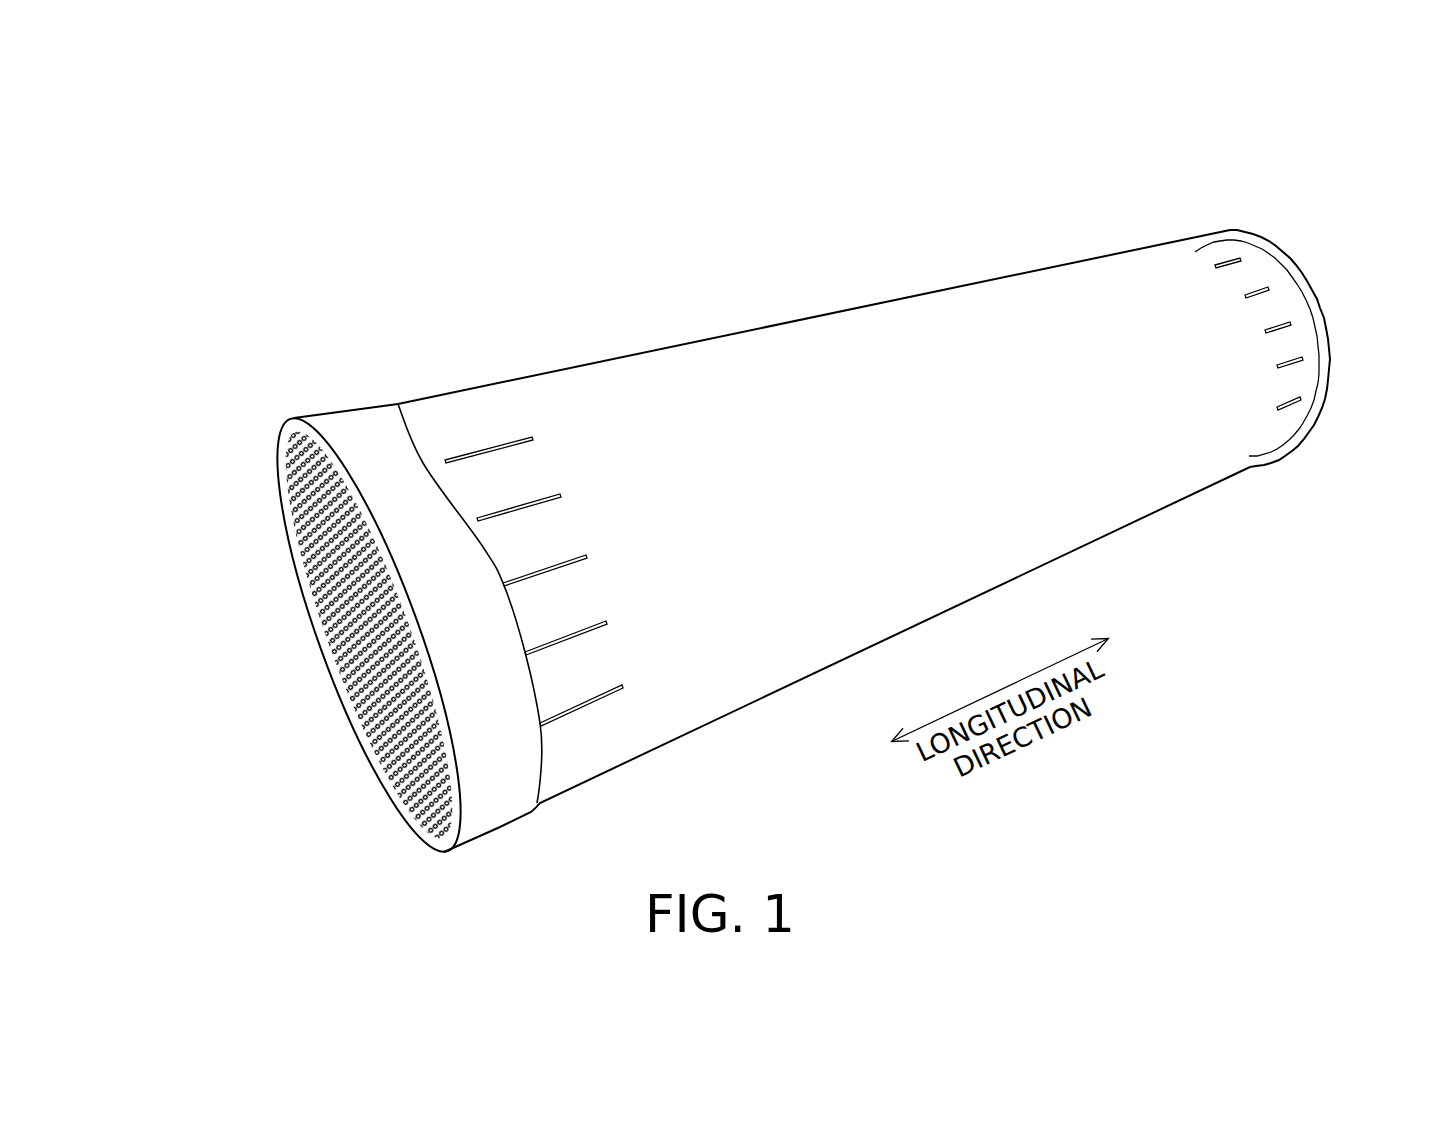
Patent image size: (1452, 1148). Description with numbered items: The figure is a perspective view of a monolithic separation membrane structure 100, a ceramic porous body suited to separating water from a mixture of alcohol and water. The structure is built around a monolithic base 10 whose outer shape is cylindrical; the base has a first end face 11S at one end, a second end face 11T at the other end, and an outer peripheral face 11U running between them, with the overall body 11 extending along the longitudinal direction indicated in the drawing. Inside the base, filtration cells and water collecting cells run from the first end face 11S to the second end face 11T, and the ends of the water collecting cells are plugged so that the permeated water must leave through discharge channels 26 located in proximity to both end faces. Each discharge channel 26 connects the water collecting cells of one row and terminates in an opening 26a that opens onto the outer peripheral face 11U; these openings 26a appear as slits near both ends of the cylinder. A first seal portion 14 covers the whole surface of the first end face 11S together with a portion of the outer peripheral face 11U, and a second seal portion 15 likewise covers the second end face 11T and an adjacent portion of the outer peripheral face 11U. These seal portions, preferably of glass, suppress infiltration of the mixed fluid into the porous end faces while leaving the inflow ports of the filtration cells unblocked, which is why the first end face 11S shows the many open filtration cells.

The monolithic separation membrane structure 100 is at (305, 207).
The monolithic base 10 is at (1243, 218).
The cylindrical portion 11 is at (790, 383).
The outer peripheral face 11U is at (662, 345).
The second end face 11T is at (1290, 265).
The first end face 11S is at (295, 550).
The first seal portion 14 is at (345, 437).
The second seal portion 15 is at (1308, 388).
The discharge channel 26 is at (488, 453).
The opening 26a is at (490, 460).